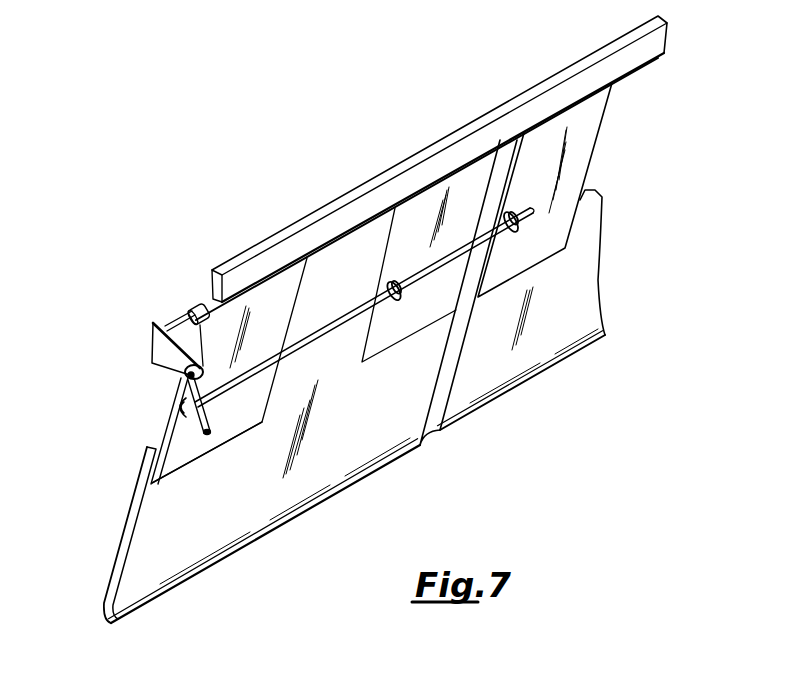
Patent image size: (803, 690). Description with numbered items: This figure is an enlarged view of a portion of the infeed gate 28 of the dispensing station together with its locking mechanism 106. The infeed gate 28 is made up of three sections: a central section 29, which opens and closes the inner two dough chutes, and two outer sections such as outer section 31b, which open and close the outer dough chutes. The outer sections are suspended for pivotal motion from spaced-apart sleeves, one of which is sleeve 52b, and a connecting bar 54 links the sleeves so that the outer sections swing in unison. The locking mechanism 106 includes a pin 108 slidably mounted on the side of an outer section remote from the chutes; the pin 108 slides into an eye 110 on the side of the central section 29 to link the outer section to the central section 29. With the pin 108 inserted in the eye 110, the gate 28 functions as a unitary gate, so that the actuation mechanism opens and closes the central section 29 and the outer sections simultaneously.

The connecting bar 54 is at (398, 184).
The locking mechanism 106 is at (566, 163).
The pin 108 is at (321, 322).
The eye 110 is at (520, 221).
The sleeve 52b is at (203, 303).
The infeed gate 28 is at (125, 493).
The outer section 31b is at (367, 457).
The central section 29 is at (566, 307).